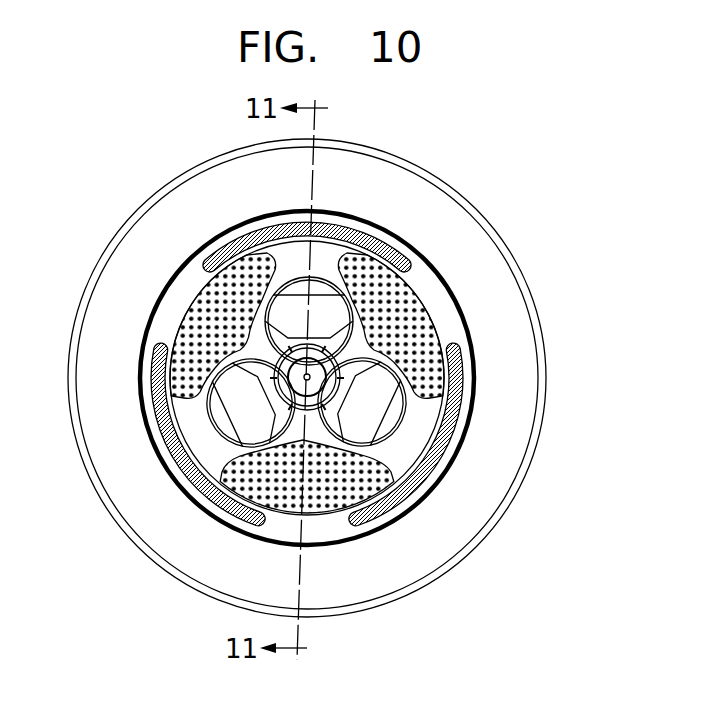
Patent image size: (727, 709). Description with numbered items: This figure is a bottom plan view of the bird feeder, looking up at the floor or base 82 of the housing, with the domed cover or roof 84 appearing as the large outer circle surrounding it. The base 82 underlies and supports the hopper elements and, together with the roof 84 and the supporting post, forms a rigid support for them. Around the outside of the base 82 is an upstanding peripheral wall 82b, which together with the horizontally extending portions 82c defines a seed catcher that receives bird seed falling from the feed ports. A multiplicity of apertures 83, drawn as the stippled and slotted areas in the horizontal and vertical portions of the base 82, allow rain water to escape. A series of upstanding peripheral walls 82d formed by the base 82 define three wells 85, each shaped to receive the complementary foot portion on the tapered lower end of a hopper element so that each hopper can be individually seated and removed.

The base 82 is at (457, 449).
The upstanding peripheral wall 82b is at (332, 527).
The horizontally extending portions 82c is at (413, 320).
The upstanding peripheral walls 82d is at (213, 415).
The apertures 83 is at (422, 348).
The roof 84 is at (463, 194).
The wells 85 is at (323, 333).